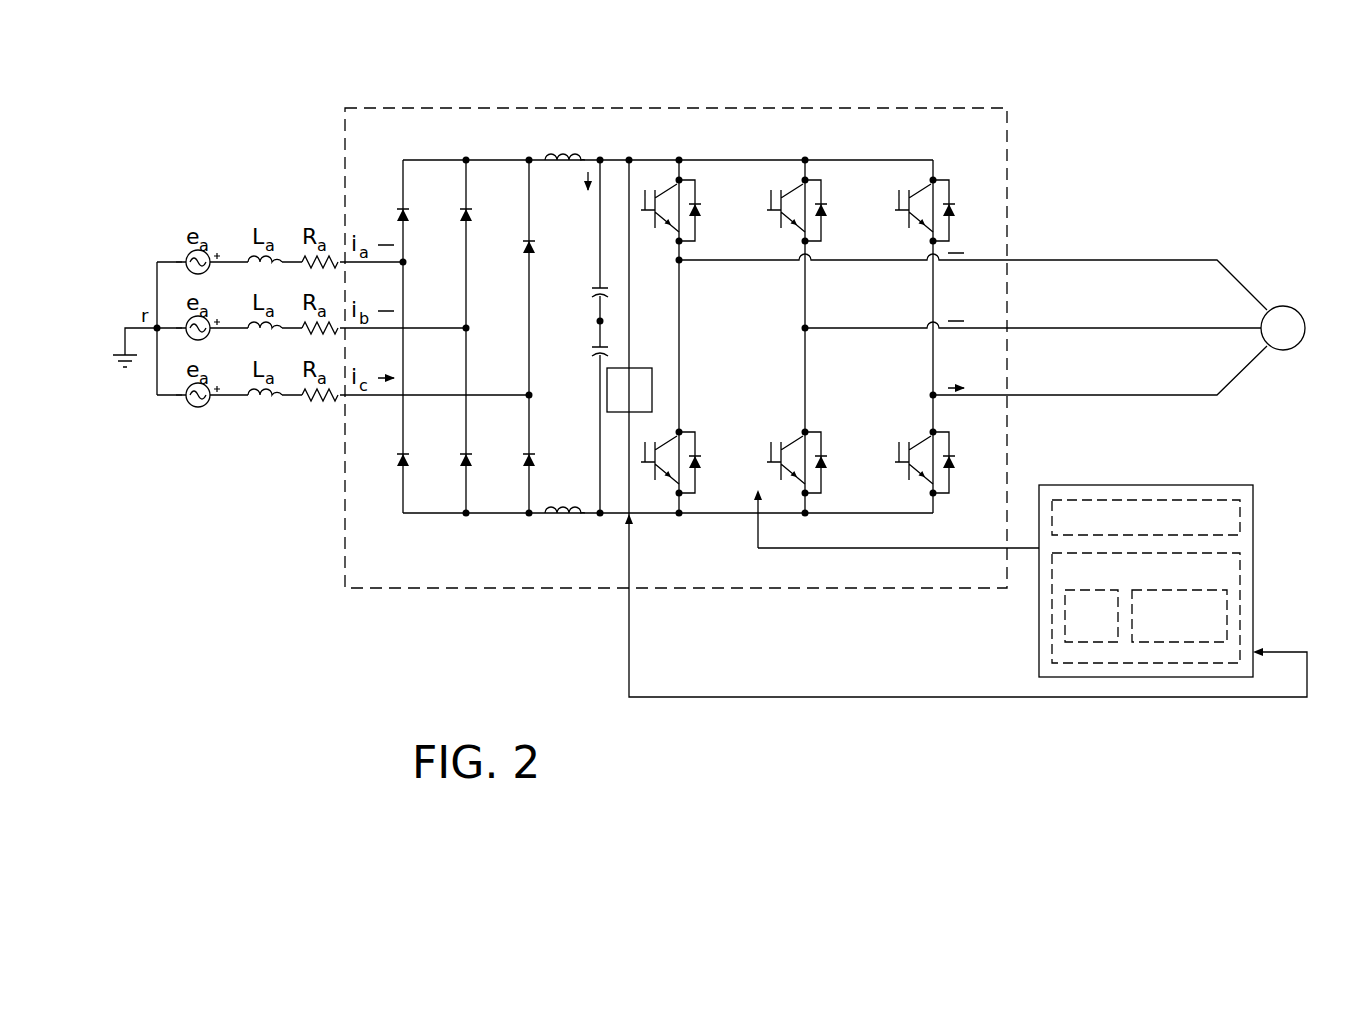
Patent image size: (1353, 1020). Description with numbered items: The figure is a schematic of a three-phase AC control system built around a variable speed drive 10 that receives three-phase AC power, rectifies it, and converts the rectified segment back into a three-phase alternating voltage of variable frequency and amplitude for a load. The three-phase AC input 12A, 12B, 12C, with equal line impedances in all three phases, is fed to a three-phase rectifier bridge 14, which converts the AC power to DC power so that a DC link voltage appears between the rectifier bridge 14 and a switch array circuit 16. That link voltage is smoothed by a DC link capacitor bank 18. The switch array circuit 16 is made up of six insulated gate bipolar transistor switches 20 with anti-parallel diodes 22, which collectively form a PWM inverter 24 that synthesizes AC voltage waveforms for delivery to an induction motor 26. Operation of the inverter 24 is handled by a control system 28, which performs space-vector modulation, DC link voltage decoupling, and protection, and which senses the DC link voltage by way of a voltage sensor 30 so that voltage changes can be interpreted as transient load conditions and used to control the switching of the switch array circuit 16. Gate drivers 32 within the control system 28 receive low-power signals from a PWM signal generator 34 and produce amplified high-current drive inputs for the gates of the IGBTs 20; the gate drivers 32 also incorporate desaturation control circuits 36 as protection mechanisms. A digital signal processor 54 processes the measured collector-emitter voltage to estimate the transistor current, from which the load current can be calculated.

The variable speed drive 10 is at (1007, 136).
The three-phase AC input (phase A) 12A is at (206, 272).
The three-phase AC input (phase B) 12B is at (206, 338).
The three-phase AC input (phase C) 12C is at (206, 405).
The three-phase rectifier bridge 14 is at (416, 534).
The switch array circuit 16 is at (730, 528).
The DC link capacitor bank 18 is at (640, 349).
The insulated gate bipolar transistor switch 20 is at (783, 325).
The anti-parallel diode 22 is at (953, 460).
The PWM inverter 24 is at (760, 380).
The induction motor 26 is at (1283, 306).
The control system 28 is at (966, 591).
The voltage sensor 30 is at (652, 392).
The gate driver 32 is at (1240, 568).
The PWM signal generator 34 is at (1240, 516).
The desaturation control circuit 36 is at (1180, 590).
The digital signal processor 54 is at (1090, 590).